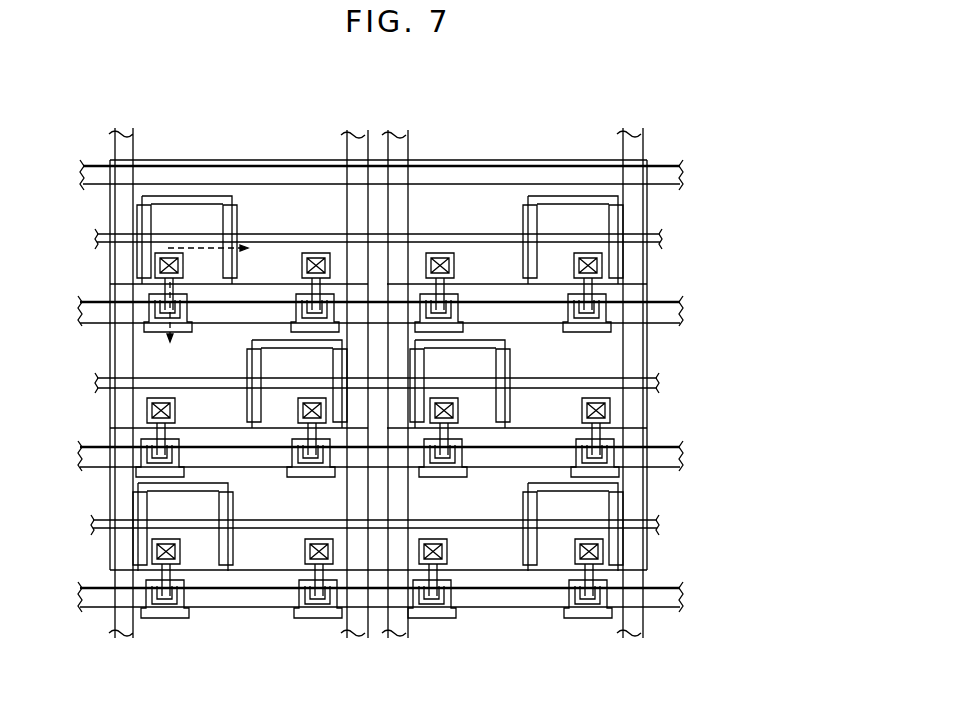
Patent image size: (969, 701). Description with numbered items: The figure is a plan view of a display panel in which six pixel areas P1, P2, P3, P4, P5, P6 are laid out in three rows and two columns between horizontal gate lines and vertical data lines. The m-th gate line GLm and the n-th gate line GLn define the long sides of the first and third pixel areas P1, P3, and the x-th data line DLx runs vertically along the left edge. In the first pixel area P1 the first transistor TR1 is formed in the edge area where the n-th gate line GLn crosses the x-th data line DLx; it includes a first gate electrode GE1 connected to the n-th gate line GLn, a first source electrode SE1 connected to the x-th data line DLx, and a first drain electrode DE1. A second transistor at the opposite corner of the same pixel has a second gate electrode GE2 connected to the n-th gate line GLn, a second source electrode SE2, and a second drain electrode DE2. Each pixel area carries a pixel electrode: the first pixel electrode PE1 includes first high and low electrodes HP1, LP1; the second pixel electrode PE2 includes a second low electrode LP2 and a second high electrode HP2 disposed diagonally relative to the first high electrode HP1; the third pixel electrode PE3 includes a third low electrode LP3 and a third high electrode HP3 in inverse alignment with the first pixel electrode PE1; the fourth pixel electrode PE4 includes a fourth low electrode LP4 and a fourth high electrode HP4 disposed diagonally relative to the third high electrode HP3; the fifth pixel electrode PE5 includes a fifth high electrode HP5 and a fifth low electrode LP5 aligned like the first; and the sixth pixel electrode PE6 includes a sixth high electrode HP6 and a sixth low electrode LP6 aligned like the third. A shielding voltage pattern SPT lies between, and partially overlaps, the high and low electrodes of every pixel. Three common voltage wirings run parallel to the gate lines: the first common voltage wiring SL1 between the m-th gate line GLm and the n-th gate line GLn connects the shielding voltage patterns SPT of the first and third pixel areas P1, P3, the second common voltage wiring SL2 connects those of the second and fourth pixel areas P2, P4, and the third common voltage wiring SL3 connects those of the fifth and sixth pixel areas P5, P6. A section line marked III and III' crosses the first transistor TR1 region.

The m-th gate line GLm is at (680, 176).
The n-th gate line GLn is at (680, 317).
The first common voltage wiring SL1 is at (660, 238).
The second common voltage wiring SL2 is at (613, 430).
The third common voltage wiring SL3 is at (657, 525).
The x-th data line DLx is at (125, 638).
The first pixel area P1 is at (270, 209).
The second pixel area P2 is at (212, 416).
The third pixel area P3 is at (465, 209).
The fourth pixel area P4 is at (540, 416).
The fifth pixel area P5 is at (275, 553).
The sixth pixel area P6 is at (505, 553).
The first pixel electrode PE1 is at (154, 188).
The second pixel electrode PE2 is at (180, 408).
The third pixel electrode PE3 is at (554, 188).
The fourth pixel electrode PE4 is at (581, 408).
The fifth pixel electrode PE5 is at (209, 584).
The sixth pixel electrode PE6 is at (515, 584).
The first high electrode HP1 is at (183, 205).
The second high electrode HP2 is at (147, 410).
The third high electrode HP3 is at (555, 210).
The fourth high electrode HP4 is at (612, 410).
The fifth high electrode HP5 is at (268, 570).
The sixth high electrode HP6 is at (488, 560).
The first low electrode LP1 is at (230, 211).
The second low electrode LP2 is at (277, 355).
The third low electrode LP3 is at (578, 123).
The fourth low electrode LP4 is at (482, 350).
The fifth low electrode LP5 is at (222, 565).
The sixth low electrode LP6 is at (535, 566).
The shielding voltage pattern SPT is at (220, 217).
The first transistor TR1 is at (102, 284).
The first drain electrode DE1 is at (156, 265).
The first source electrode SE1 is at (150, 312).
The first gate electrode GE1 is at (142, 322).
The second drain electrode DE2 is at (313, 253).
The second source electrode SE2 is at (295, 298).
The second gate electrode GE2 is at (285, 297).
The section line III is at (161, 321).
The section line III' is at (220, 250).